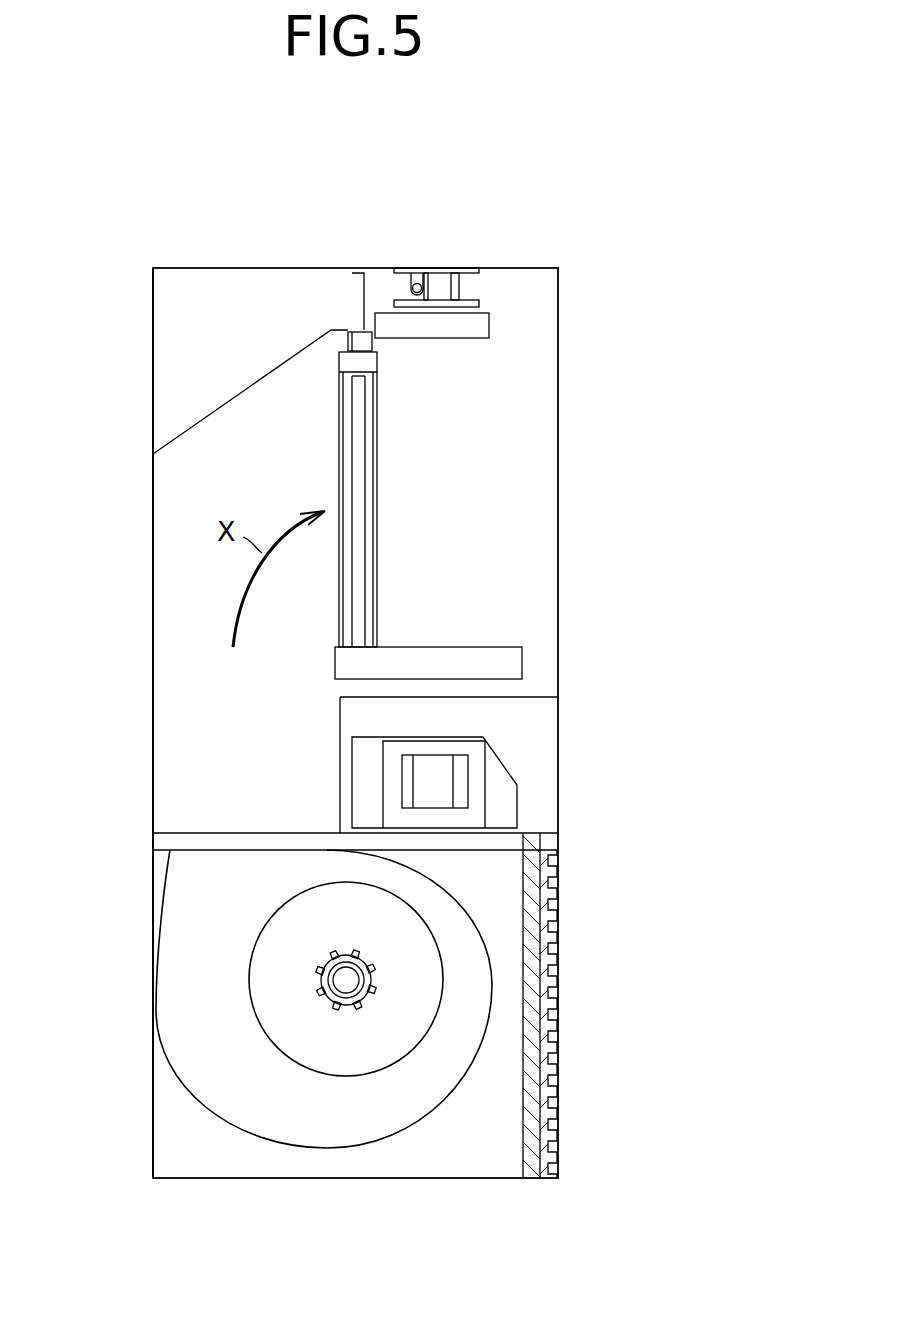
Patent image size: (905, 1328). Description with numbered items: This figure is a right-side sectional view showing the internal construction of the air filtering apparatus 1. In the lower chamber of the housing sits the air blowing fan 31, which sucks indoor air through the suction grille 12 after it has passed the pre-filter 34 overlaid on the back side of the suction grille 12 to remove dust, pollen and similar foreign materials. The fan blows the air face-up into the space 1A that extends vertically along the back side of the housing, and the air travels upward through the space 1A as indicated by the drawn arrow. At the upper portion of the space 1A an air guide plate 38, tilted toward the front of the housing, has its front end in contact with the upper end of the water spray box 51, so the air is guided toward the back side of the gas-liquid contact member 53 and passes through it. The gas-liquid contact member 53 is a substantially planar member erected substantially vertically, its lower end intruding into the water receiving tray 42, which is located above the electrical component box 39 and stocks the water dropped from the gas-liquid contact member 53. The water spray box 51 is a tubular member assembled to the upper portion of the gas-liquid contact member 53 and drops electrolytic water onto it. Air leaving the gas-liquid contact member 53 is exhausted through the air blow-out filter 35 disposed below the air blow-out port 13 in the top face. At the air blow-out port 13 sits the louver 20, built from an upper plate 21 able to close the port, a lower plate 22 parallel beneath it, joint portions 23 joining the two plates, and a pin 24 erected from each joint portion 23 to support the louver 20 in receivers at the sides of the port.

The air filtering apparatus 1 is at (661, 205).
The space 1A is at (177, 653).
The suction grille 12 is at (570, 1093).
The air blow-out port 13 is at (477, 243).
The louver 20 is at (503, 243).
The upper plate 21 is at (468, 270).
The lower plate 22 is at (480, 303).
The joint portions 23 is at (448, 276).
The pin 24 is at (416, 283).
The air blowing fan 31 is at (343, 1115).
The pre-filter 34 is at (530, 1125).
The air blow-out filter 35 is at (490, 329).
The air guide plate 38 is at (190, 427).
The electrical component box 39 is at (512, 773).
The water receiving tray 42 is at (510, 668).
The water spray box 51 is at (366, 343).
The gas-liquid contact member 53 is at (372, 440).